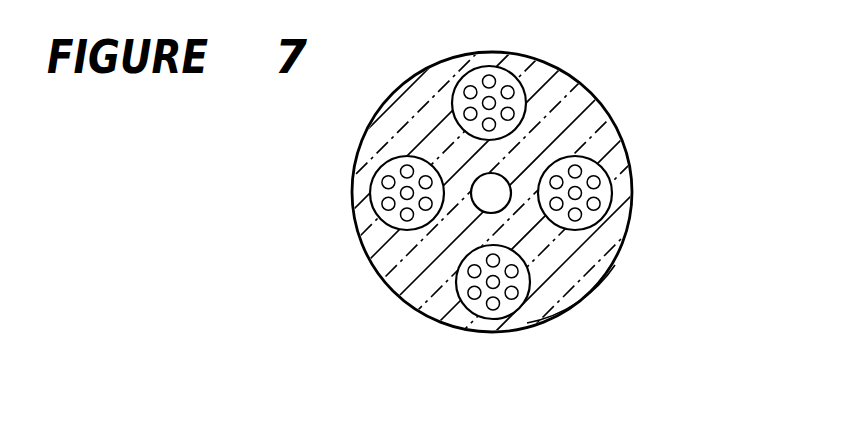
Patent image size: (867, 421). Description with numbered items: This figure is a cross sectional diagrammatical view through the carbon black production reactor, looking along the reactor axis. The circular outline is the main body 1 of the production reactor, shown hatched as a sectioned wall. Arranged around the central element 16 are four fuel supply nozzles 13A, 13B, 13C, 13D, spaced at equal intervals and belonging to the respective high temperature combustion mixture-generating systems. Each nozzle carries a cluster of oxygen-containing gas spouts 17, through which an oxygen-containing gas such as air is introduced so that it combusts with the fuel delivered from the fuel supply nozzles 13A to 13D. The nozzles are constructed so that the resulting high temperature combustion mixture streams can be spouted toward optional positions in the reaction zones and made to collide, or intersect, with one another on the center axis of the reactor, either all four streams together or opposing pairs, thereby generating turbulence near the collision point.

The main body of the production reactor 1 is at (361, 149).
The fuel supply nozzle 13A is at (499, 94).
The fuel supply nozzle 13B is at (376, 223).
The fuel supply nozzle 13C is at (470, 311).
The fuel supply nozzle 13D is at (600, 163).
The central strength member 16 is at (504, 206).
The oxygen-containing gas spout 17 is at (458, 88).